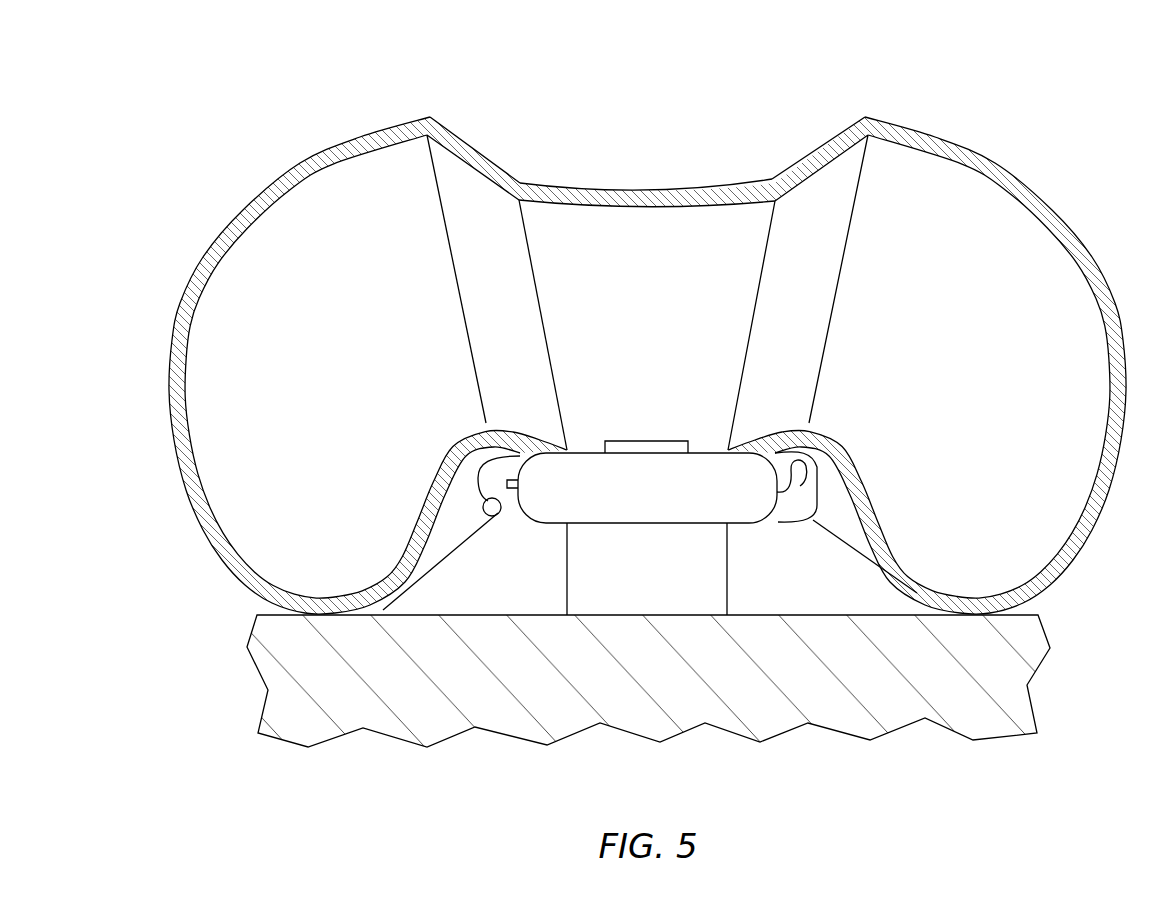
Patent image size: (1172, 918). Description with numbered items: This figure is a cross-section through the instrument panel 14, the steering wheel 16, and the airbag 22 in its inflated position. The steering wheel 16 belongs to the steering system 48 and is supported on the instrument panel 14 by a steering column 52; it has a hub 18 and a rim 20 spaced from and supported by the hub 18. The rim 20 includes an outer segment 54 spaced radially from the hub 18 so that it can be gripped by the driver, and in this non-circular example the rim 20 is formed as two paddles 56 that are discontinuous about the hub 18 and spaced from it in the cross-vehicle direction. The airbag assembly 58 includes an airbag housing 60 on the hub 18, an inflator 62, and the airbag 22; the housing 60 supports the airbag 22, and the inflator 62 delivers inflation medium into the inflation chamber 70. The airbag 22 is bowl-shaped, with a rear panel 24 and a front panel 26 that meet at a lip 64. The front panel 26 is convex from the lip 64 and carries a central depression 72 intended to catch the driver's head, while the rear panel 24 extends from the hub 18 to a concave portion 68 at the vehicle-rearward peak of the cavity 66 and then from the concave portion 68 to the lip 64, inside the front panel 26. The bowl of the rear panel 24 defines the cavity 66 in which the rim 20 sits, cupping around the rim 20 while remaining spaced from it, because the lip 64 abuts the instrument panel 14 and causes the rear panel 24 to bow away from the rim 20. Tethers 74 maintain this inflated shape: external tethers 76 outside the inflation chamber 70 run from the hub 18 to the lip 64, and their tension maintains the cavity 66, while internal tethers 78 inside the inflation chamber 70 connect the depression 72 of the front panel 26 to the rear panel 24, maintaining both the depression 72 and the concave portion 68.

The instrument panel 14 is at (305, 708).
The steering wheel 16 is at (741, 508).
The hub 18 is at (555, 506).
The rim 20 is at (792, 504).
The airbag 22 is at (318, 216).
The rear panel 24 is at (230, 585).
The front panel 26 is at (1043, 197).
The steering system 48 is at (630, 566).
The steering column 52 is at (690, 592).
The outer segment 54 is at (472, 483).
The paddles 56 is at (820, 472).
The airbag assembly 58 is at (424, 110).
The airbag housing 60 is at (713, 450).
The inflator 62 is at (655, 440).
The lip 64 is at (983, 616).
The cavity 66 is at (786, 548).
The concave portion 68 is at (471, 432).
The inflation chamber 70 is at (1047, 267).
The depression 72 is at (665, 188).
The tethers 74 is at (456, 284).
The external tethers 76 is at (442, 556).
The internal tethers 78 is at (536, 292).